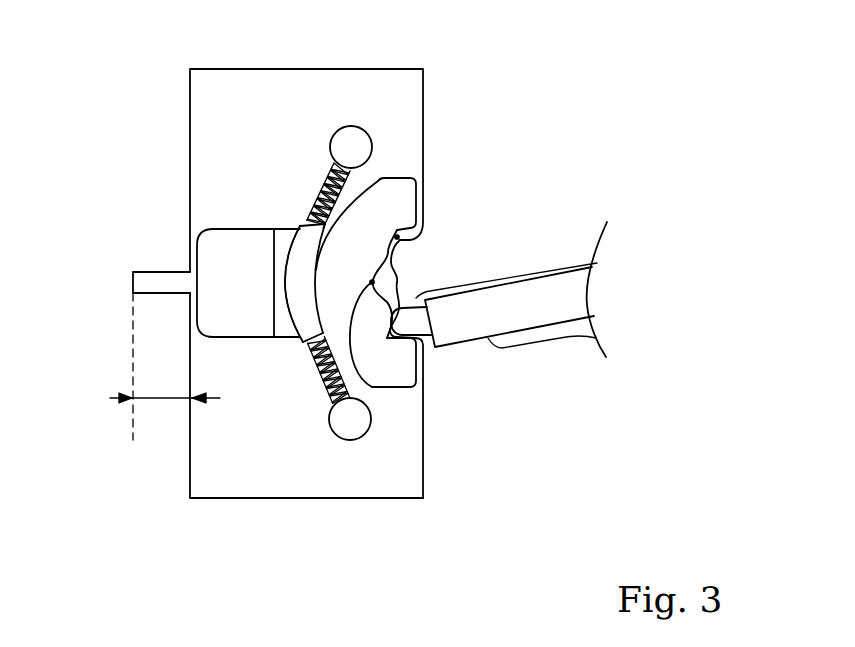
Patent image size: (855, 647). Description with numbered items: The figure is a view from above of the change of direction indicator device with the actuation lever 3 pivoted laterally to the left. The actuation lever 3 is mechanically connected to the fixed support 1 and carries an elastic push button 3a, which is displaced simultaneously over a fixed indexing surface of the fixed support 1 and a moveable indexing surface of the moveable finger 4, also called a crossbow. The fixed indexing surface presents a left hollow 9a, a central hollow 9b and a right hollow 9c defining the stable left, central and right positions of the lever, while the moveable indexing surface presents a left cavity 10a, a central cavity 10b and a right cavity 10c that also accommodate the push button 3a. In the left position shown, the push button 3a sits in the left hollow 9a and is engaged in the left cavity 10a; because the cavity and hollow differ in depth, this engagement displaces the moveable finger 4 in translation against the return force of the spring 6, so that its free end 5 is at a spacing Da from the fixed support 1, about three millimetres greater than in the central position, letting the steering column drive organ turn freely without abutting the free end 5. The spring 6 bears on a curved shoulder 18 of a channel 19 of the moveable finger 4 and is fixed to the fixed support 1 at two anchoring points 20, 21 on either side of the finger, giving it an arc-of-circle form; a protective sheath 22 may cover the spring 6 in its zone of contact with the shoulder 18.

The fixed support 1 is at (328, 498).
The actuation lever 3 is at (565, 345).
The elastic push button 3a is at (410, 311).
The moveable finger 4 is at (258, 345).
The free end 5 is at (143, 273).
The spring 6 is at (318, 196).
The left hollow 9a is at (389, 316).
The central hollow 9b is at (393, 285).
The right hollow 9c is at (386, 255).
The left cavity 10a is at (388, 338).
The central cavity 10b is at (414, 360).
The right cavity 10c is at (398, 238).
The shoulder 18 is at (385, 172).
The channel 19 is at (279, 237).
The anchoring point 20 is at (360, 429).
The anchoring point 21 is at (357, 145).
The protective sheath 22 is at (306, 322).
The spacing Da is at (165, 399).